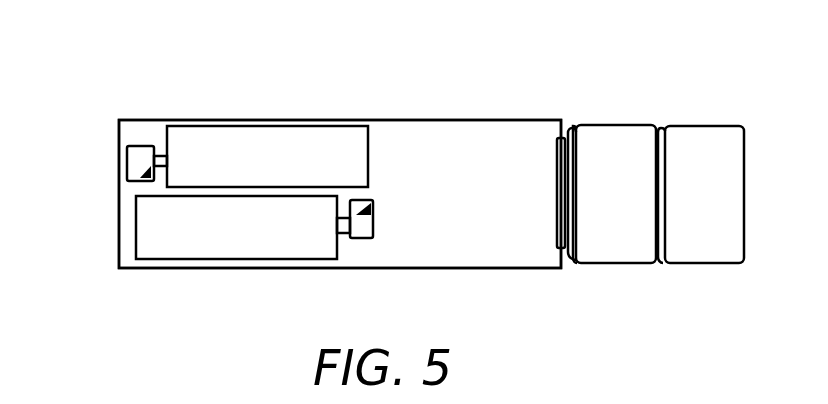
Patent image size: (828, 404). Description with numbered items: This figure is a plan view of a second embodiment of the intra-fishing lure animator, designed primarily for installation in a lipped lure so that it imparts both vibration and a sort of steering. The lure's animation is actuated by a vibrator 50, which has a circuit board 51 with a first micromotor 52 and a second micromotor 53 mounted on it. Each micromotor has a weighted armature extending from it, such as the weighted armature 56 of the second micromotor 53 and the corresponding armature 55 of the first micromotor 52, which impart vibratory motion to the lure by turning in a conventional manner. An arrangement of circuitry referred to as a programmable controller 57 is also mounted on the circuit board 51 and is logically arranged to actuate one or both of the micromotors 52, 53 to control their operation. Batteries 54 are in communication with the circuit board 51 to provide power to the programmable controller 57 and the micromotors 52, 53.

The vibrator 50 is at (97, 172).
The circuit board 51 is at (482, 120).
The first micromotor 52 is at (220, 124).
The second micromotor 53 is at (186, 259).
The batteries 54 is at (705, 125).
The first switch / sensor 55 is at (148, 146).
The weighted armature 56 is at (355, 238).
The programmable controller 57 is at (453, 233).